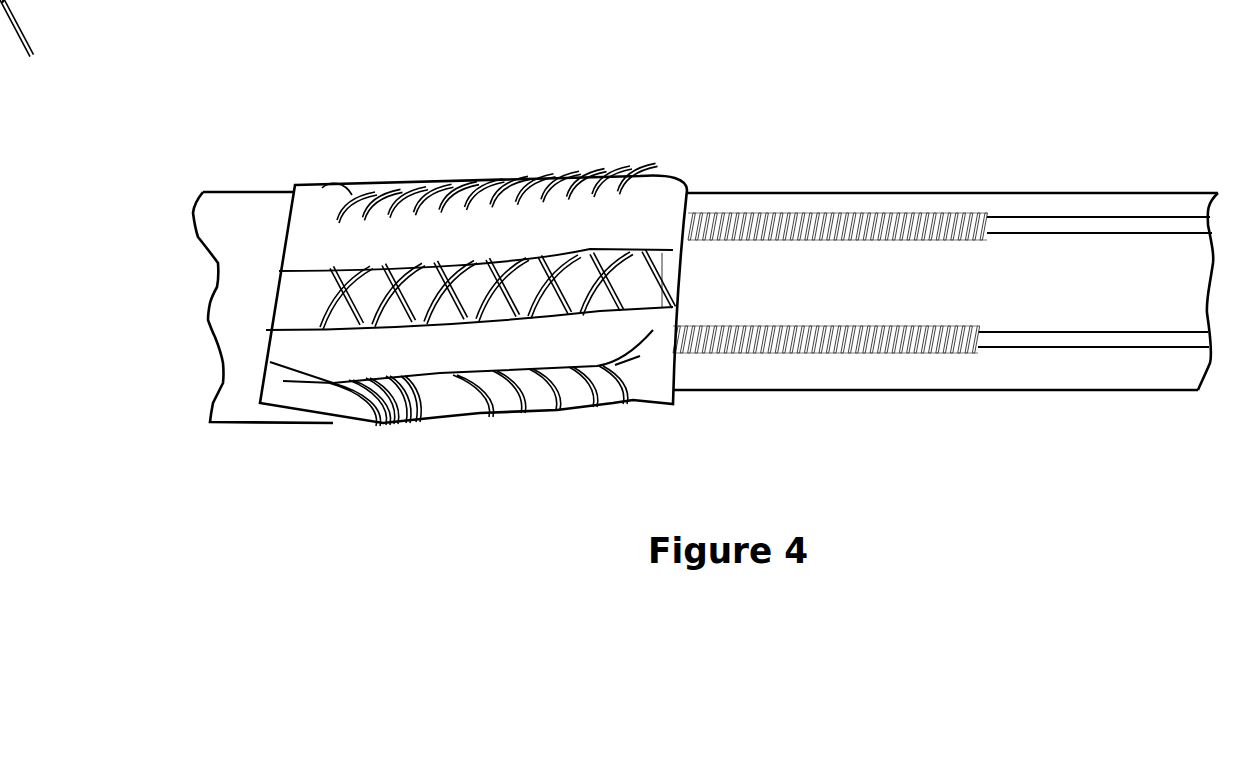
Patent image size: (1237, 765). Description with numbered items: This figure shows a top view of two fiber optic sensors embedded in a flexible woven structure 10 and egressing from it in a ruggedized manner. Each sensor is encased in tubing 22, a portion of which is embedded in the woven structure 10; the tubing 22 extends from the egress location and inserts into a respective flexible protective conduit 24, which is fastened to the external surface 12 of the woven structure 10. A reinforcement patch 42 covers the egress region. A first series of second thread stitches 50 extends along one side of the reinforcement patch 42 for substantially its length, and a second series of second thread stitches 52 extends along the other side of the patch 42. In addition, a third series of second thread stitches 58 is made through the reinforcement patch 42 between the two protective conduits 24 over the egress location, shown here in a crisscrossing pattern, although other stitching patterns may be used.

The flexible woven structure 10 is at (1097, 294).
The external surface 12 is at (972, 192).
The tubing 22 is at (1142, 327).
The flexible protective conduit 24 is at (832, 325).
The reinforcement patch 42 is at (510, 360).
The first series of second thread stitches 50 is at (375, 192).
The second series of second thread stitches 52 is at (383, 427).
The third series of second thread stitches 58 is at (490, 265).